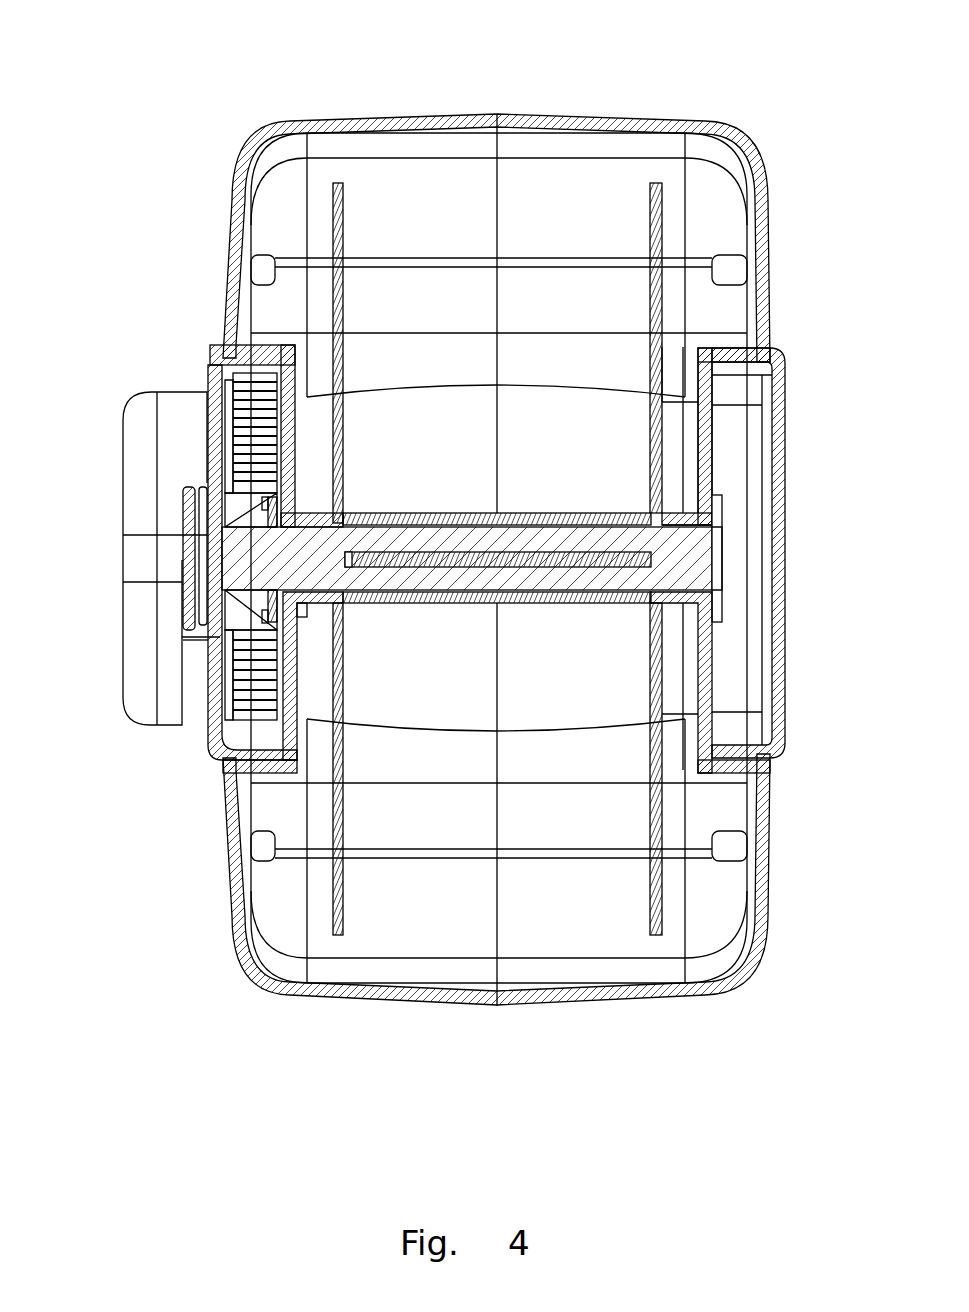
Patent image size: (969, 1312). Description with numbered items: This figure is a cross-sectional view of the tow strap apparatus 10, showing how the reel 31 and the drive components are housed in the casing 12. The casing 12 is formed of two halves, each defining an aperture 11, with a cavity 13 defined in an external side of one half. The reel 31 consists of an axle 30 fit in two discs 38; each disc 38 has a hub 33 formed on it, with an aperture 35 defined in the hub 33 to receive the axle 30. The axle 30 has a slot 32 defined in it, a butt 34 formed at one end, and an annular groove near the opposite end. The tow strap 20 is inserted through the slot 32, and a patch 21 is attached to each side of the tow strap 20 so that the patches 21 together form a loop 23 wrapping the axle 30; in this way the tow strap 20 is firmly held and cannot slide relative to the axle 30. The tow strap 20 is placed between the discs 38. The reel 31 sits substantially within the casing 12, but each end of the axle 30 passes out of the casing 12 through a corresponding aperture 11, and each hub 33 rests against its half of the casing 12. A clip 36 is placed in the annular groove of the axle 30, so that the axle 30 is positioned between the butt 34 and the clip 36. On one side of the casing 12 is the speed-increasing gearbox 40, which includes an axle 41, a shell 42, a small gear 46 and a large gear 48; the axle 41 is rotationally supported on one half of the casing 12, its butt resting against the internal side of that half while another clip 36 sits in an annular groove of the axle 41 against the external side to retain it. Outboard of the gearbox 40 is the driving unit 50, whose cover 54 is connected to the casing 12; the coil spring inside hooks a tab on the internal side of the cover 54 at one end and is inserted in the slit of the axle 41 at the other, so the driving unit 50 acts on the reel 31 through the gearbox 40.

The tow strap apparatus 10 is at (228, 112).
The aperture 11 is at (715, 578).
The casing 12 is at (736, 148).
The cavity 13 is at (735, 748).
The tow strap 20 is at (533, 557).
The patch 21 is at (423, 595).
The loop 23 is at (437, 535).
The axle 30 is at (577, 578).
The reel 31 is at (657, 942).
The slot 32 is at (480, 558).
The hub 33 is at (670, 598).
The butt 34 is at (722, 503).
The aperture 35 is at (700, 552).
The clip 36 is at (270, 497).
The disc 38 is at (338, 915).
The speed-increasing gearbox 40 is at (50, 728).
The axle 41 is at (302, 615).
The shell 42 is at (215, 693).
The small gear 46 is at (238, 610).
The large gear 48 is at (262, 707).
The driving unit 50 is at (118, 557).
The cover 54 is at (142, 432).